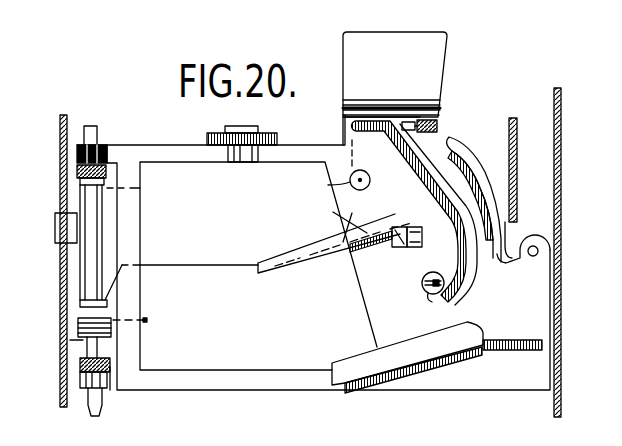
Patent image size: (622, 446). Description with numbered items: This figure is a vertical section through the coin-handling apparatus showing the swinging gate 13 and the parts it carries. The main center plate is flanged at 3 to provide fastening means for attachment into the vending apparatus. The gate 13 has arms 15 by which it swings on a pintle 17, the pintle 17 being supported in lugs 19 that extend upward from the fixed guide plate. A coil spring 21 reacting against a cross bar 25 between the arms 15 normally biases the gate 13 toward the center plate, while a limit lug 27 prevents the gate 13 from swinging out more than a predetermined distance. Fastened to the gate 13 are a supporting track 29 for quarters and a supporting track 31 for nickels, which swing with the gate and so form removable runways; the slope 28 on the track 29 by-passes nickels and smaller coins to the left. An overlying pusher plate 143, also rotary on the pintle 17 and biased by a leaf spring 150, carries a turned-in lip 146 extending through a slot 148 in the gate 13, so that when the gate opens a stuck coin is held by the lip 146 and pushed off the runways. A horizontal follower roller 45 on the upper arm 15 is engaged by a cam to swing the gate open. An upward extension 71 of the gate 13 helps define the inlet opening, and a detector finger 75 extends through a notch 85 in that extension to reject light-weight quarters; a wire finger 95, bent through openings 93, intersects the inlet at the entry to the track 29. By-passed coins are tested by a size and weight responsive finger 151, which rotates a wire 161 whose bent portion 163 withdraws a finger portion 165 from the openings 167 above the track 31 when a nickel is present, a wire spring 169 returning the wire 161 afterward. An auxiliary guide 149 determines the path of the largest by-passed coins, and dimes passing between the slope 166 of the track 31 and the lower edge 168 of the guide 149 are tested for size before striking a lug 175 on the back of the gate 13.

The flange 3 is at (60, 268).
The swinging gate 13 is at (336, 148).
The arms 15 is at (192, 158).
The pintle 17 is at (101, 412).
The lugs 19 is at (77, 171).
The coil spring 21 is at (78, 328).
The cross bar 25 is at (140, 288).
The limit lug 27 is at (508, 204).
The slope 28 is at (410, 227).
The supporting track 29 is at (322, 238).
The supporting track 31 is at (413, 338).
The follower roller 45 is at (208, 136).
The upward extension 71 is at (358, 40).
The detector finger 75 is at (438, 125).
The notch 85 is at (419, 117).
The openings 93 is at (360, 170).
The finger 95 is at (346, 212).
The pusher plate 143 is at (197, 268).
The turned-in lip 146 is at (473, 268).
The slot 148 is at (470, 300).
The auxiliary guide 149 is at (467, 150).
The leaf spring 150 is at (55, 216).
The size and weight responsive finger 151 is at (414, 247).
The wire 161 is at (398, 247).
The bent portion 163 is at (337, 214).
The finger portion 165 is at (434, 300).
The slope 166 is at (478, 325).
The openings 167 is at (422, 283).
The lower edge 168 is at (523, 258).
The wire spring 169 is at (356, 255).
The lug 175 is at (510, 346).